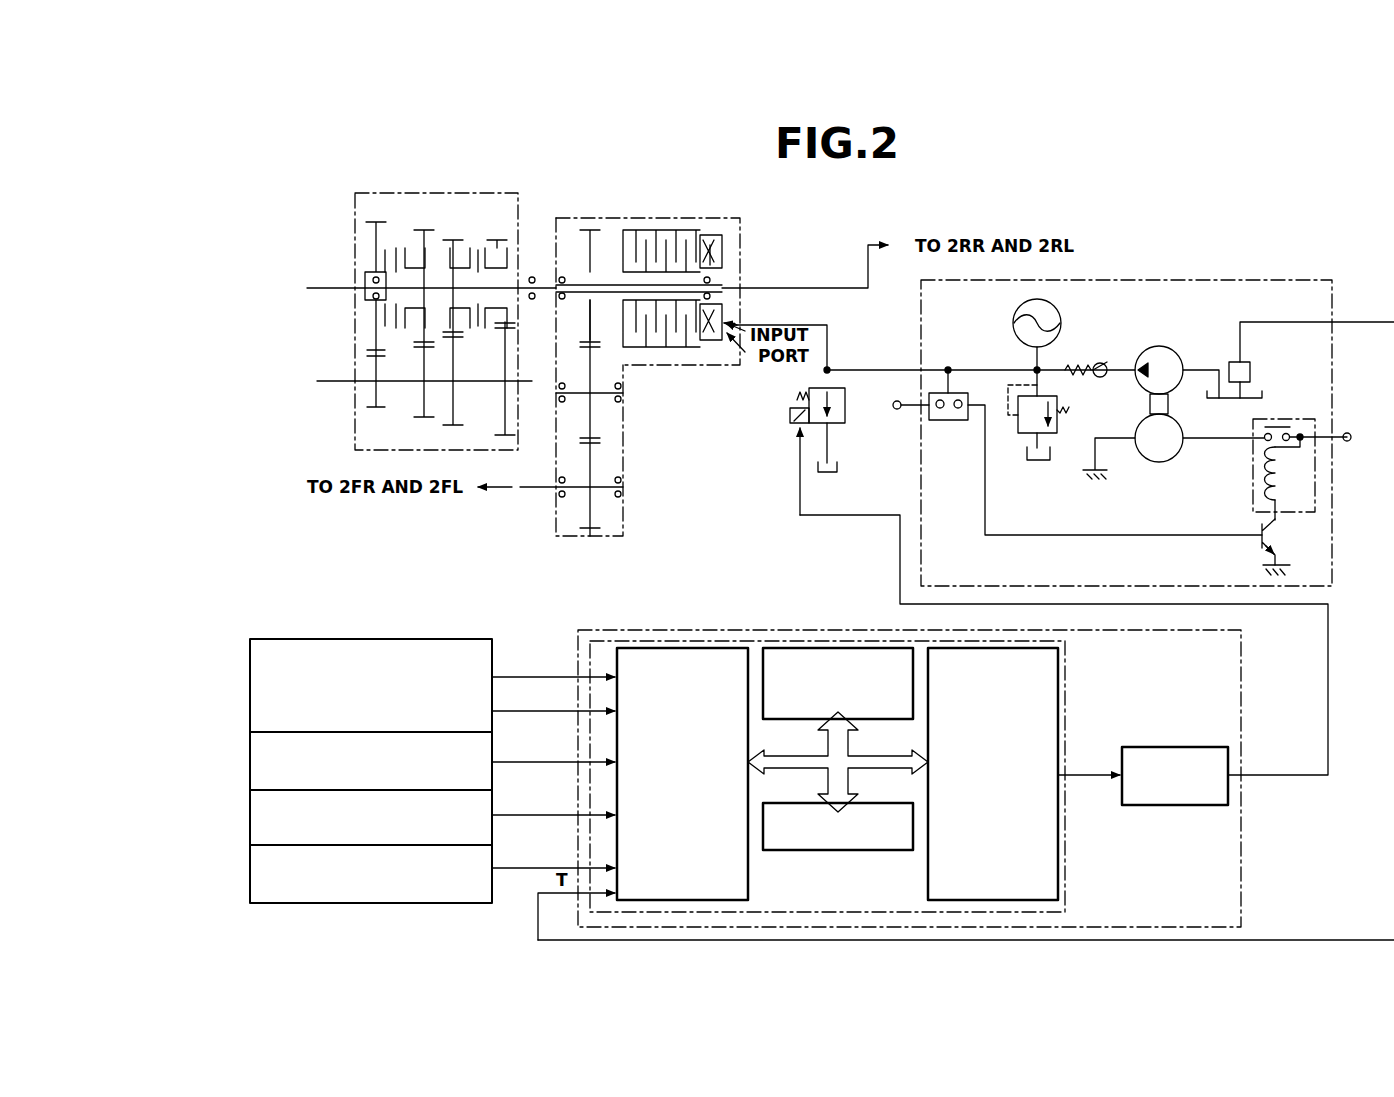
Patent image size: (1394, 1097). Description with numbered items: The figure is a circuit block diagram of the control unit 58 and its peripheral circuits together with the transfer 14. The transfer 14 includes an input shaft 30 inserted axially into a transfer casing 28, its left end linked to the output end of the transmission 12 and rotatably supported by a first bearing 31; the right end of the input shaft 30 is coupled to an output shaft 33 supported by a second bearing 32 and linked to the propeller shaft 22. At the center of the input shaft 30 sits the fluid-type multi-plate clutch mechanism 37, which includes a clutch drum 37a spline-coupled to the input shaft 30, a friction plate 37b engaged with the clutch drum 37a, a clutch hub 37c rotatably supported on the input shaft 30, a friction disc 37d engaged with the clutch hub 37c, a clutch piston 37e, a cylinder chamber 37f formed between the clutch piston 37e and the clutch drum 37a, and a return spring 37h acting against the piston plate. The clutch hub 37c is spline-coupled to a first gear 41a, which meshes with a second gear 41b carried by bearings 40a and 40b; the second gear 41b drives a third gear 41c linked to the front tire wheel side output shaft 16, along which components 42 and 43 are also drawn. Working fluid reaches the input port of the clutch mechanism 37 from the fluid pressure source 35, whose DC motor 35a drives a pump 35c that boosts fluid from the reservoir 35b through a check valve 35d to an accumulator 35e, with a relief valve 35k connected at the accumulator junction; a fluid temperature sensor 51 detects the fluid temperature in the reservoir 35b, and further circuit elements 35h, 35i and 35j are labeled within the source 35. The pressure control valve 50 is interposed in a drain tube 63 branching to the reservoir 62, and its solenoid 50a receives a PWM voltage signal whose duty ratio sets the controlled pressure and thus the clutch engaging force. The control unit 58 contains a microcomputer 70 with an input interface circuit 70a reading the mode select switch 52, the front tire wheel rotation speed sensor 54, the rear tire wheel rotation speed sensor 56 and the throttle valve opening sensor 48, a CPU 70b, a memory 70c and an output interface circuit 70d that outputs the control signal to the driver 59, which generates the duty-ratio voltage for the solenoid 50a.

The transmission 12 is at (350, 236).
The transfer 14 is at (614, 214).
The front tire wheel side output shaft 16 is at (527, 488).
The propeller shaft 22 is at (800, 287).
The transfer casing 28 is at (629, 230).
The input shaft 30 is at (566, 282).
The first bearing 31 is at (552, 297).
The second bearing 32 is at (713, 280).
The output shaft 33 is at (728, 289).
The fluid-type multi-plate clutch mechanism 37 is at (720, 284).
The clutch drum 37a is at (702, 233).
The friction plate 37b is at (642, 241).
The clutch hub 37c is at (578, 284).
The friction disc 37d is at (660, 255).
The clutch piston 37e is at (712, 258).
The cylinder chamber 37f is at (718, 319).
The return spring 37h is at (710, 245).
The bearing 40a is at (567, 402).
The bearing 40b is at (623, 399).
The first gear 41a is at (593, 330).
The second gear 41b is at (593, 432).
The third gear 41c is at (593, 522).
The bearing 42 is at (558, 479).
The bearing 43 is at (623, 487).
The pressure control valve 50 is at (793, 420).
The solenoid 50a is at (793, 415).
The reservoir 62 is at (838, 470).
The drain tube 63 is at (829, 448).
The fluid pressure source 35 is at (1185, 276).
The DC motor 35a is at (1177, 456).
The reservoir 35b is at (1262, 398).
The pump 35c is at (1176, 352).
The check valve 35d is at (1096, 377).
The accumulator 35e is at (1058, 318).
The relay 35h is at (1252, 480).
The pressure switch 35i is at (950, 421).
The transistor 35j is at (1277, 538).
The relief valve 35k is at (1062, 438).
The fluid temperature sensor 51 is at (1251, 374).
The control unit 58 is at (812, 628).
The microcomputer 70 is at (745, 640).
The input interface circuit 70a is at (663, 646).
The CPU 70b is at (843, 646).
The memory 70c is at (867, 851).
The output interface circuit 70d is at (1066, 843).
The driver 59 is at (1175, 746).
The mode select switch 52 is at (249, 680).
The front tire wheel rotation speed sensor 54 is at (250, 760).
The rear tire wheel rotation speed sensor 56 is at (253, 820).
The throttle valve opening sensor 48 is at (256, 876).